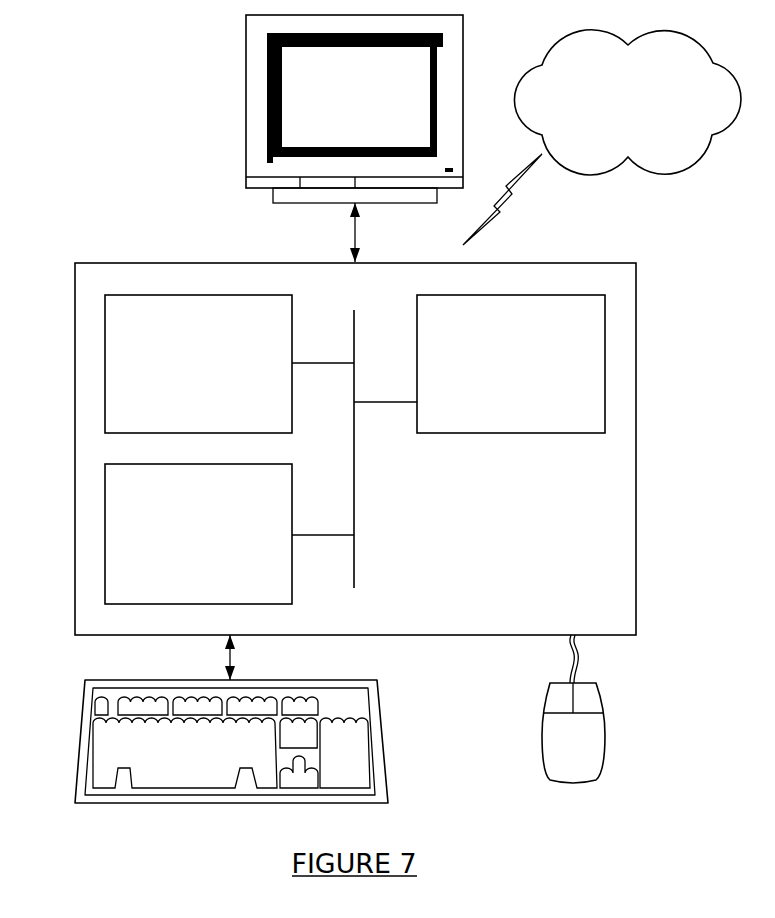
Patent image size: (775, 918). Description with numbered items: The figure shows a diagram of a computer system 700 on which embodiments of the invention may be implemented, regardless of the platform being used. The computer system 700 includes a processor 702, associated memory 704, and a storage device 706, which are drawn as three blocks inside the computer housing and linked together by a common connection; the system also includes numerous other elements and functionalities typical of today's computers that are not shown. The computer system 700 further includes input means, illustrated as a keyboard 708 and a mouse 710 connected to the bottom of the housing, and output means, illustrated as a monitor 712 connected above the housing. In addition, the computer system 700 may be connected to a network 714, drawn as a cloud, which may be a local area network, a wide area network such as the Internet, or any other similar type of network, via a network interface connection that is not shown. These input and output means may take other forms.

The computer system 700 is at (656, 322).
The processor 702 is at (492, 374).
The memory 704 is at (179, 374).
The storage device 706 is at (180, 546).
The keyboard 708 is at (165, 766).
The mouse 710 is at (555, 753).
The monitor 712 is at (338, 111).
The network 714 is at (610, 111).